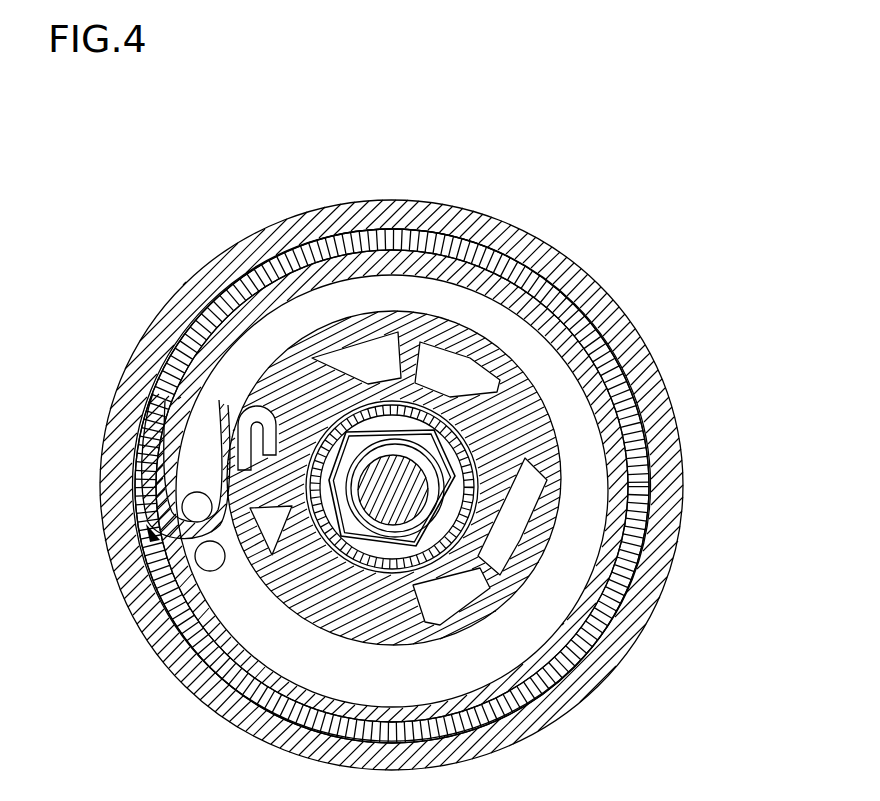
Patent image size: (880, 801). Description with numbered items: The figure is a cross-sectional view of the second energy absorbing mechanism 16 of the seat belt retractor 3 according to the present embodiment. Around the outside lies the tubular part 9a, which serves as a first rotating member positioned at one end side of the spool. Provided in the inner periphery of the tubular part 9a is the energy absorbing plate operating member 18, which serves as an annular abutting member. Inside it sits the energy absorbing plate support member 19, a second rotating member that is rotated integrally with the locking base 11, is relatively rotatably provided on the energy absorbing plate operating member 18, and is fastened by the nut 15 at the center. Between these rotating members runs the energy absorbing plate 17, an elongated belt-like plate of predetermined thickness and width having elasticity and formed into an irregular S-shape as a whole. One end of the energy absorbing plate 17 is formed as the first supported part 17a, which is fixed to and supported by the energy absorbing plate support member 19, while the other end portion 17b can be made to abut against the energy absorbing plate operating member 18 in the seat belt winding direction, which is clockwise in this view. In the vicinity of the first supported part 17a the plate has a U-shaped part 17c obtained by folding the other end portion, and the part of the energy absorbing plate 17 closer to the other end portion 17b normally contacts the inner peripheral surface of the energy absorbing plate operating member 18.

The drive unit 3 is at (545, 60).
The tubular part 9a is at (462, 226).
The locking base 11 is at (408, 500).
The nut 15 is at (456, 540).
The second energy absorbing mechanism 16 is at (586, 226).
The energy absorbing plate 17 is at (333, 399).
The first supported part 17a is at (228, 437).
The other end portion 17b is at (196, 455).
The U-shaped part 17c is at (262, 412).
The energy absorbing plate operating member 18 is at (403, 242).
The energy absorbing plate support member 19 is at (556, 405).